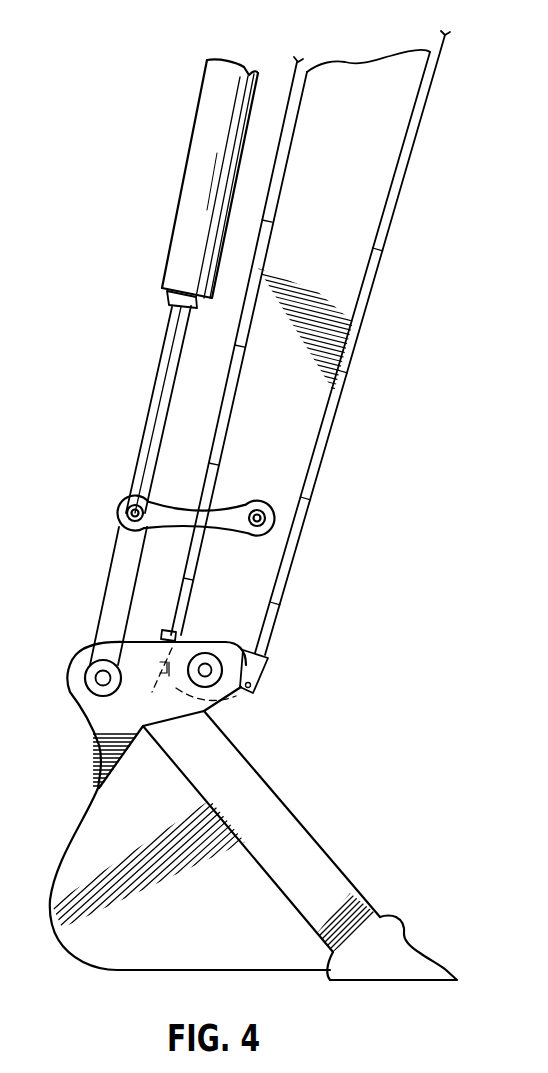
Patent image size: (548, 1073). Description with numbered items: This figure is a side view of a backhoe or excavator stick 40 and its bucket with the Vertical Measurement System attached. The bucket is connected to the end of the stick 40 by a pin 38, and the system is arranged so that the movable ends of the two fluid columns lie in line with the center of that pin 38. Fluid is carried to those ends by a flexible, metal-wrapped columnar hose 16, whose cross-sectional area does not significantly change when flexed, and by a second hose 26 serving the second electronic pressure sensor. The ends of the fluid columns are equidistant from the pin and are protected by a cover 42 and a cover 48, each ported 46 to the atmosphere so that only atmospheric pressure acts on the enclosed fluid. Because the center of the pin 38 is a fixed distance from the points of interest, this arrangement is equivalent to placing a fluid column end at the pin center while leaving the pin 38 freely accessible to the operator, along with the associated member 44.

The columnar hose 16 is at (212, 441).
The hose 26 is at (327, 443).
The pin 38 is at (206, 670).
The backhoe or excavator stick 40 is at (343, 260).
The cover 42 is at (163, 632).
The pivot block 44 is at (270, 657).
The port 46 is at (185, 684).
The cover 48 is at (252, 684).